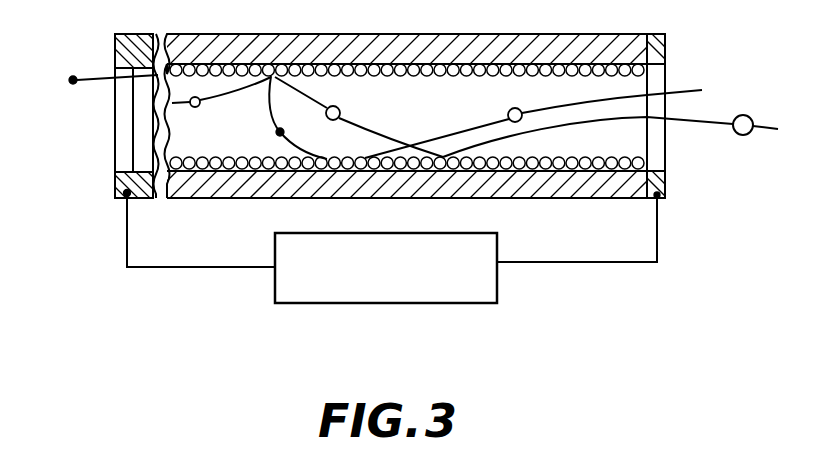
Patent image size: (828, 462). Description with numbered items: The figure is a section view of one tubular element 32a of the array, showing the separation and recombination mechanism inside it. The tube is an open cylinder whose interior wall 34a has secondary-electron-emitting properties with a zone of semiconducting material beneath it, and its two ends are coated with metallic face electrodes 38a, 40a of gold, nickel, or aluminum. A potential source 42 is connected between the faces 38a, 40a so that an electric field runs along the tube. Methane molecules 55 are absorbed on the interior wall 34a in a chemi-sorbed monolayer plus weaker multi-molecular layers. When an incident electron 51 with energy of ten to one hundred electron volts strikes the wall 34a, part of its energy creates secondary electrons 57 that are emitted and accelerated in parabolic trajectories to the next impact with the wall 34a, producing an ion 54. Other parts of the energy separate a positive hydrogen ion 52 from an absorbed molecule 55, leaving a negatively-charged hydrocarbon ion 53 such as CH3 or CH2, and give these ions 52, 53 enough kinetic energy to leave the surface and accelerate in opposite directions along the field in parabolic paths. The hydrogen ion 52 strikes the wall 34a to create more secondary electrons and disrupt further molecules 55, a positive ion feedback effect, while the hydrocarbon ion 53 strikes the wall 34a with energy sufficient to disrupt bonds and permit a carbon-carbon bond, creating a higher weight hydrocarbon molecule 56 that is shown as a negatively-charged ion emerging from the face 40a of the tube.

The tubular element 32a is at (621, 197).
The interior wall 34a is at (253, 198).
The face electrode 38a is at (122, 132).
The face electrode 40a is at (658, 137).
The potential source 42 is at (482, 303).
The incident electron 51 is at (99, 83).
The positive hydrogen ion 52 is at (207, 94).
The negatively-charged hydrocarbon ion 53 is at (345, 100).
The ion 54 is at (515, 108).
The methane molecule 55 is at (443, 156).
The higher weight hydrocarbon molecule 56 is at (749, 134).
The secondary electron 57 is at (276, 133).